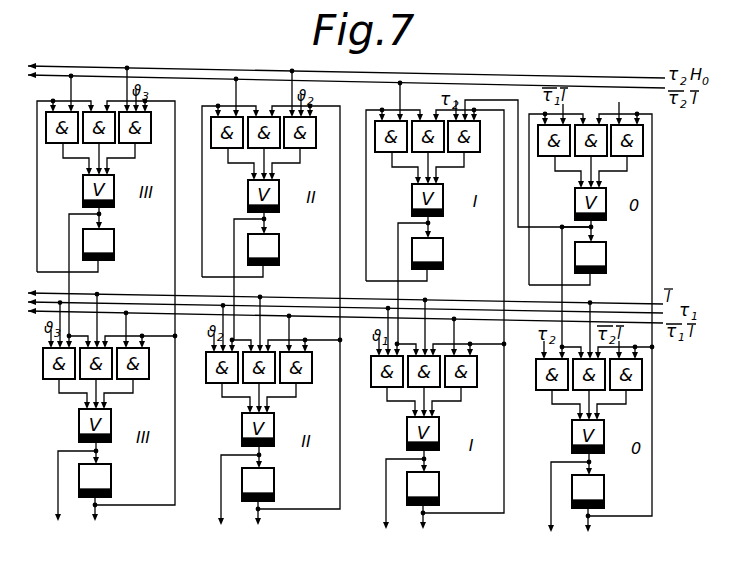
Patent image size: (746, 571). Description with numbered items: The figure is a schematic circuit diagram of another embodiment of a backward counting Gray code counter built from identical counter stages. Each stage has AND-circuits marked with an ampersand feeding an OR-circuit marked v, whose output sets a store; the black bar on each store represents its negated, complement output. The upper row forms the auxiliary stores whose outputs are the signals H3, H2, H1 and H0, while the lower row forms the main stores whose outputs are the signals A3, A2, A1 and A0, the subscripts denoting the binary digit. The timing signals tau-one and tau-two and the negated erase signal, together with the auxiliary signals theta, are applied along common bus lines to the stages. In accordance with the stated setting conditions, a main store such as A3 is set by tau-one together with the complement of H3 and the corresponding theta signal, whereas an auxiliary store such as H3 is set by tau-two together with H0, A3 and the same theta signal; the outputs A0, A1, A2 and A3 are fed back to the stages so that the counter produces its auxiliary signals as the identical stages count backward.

The auxiliary store output signal H3 is at (122, 213).
The auxiliary store output signal H2 is at (287, 218).
The auxiliary store output signal H1 is at (451, 222).
The auxiliary store output signal H0 is at (614, 226).
The main store output signal A3 is at (62, 539).
The main store output signal A2 is at (225, 543).
The main store output signal A1 is at (390, 547).
The main store output signal A0 is at (555, 550).